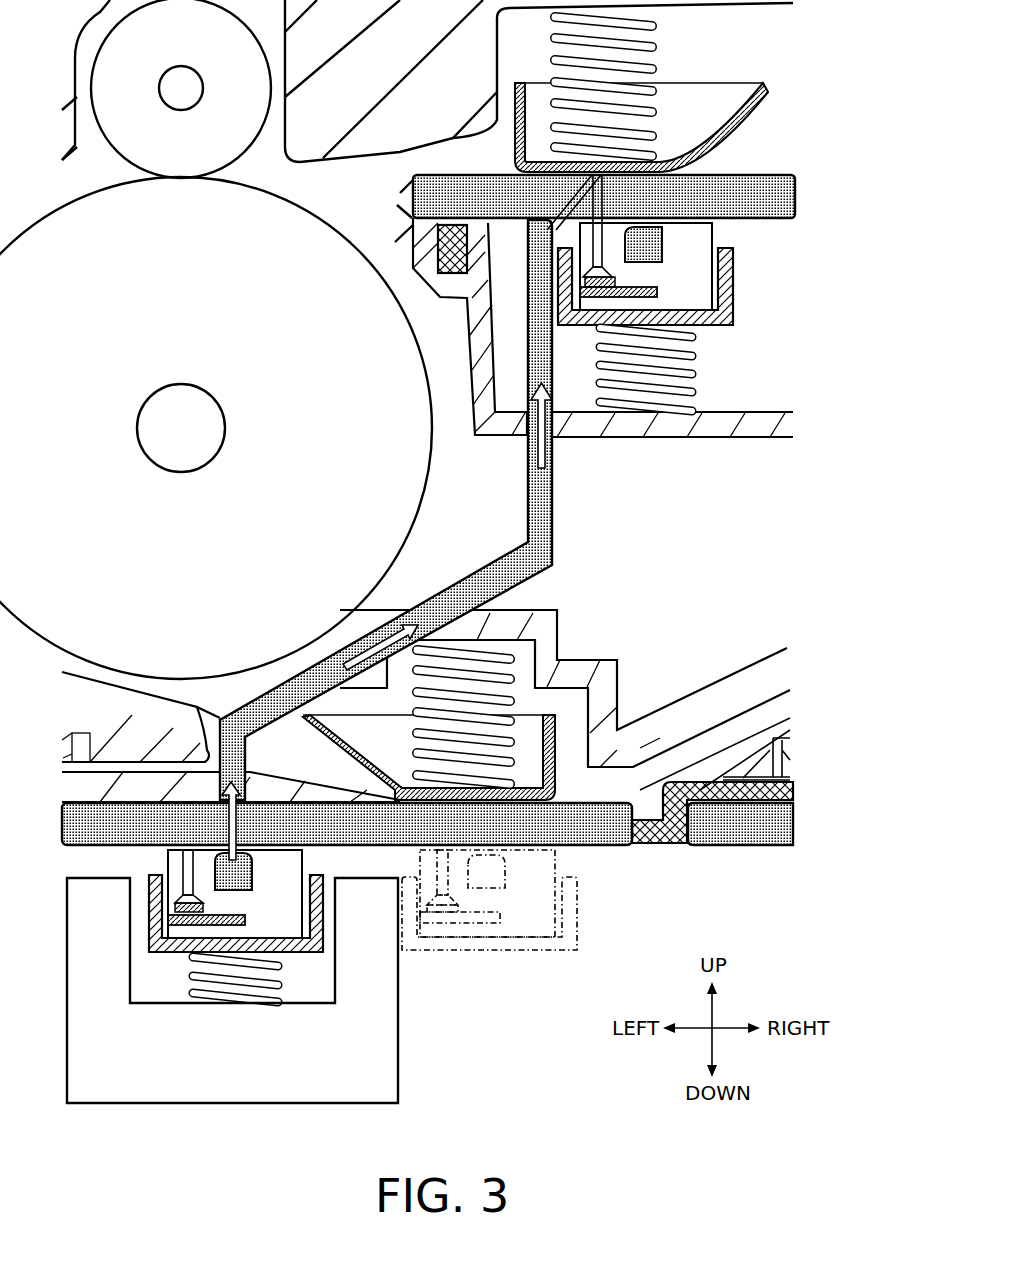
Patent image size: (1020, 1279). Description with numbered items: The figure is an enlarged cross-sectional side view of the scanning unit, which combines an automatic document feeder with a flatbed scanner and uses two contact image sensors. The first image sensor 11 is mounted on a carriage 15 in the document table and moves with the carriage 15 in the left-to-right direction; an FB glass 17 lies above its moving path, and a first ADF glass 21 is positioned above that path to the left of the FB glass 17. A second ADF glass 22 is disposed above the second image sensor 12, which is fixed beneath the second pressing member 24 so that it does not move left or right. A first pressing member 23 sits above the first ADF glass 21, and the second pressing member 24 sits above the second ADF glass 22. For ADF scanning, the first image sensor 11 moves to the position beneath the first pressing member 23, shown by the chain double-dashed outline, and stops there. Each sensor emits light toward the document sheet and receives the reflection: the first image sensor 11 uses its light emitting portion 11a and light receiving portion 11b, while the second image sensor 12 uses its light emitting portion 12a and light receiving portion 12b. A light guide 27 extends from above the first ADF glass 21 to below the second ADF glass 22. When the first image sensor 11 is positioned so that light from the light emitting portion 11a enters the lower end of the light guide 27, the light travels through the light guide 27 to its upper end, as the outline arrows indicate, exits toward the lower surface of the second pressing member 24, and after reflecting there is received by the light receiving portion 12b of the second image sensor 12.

The first image sensor 11 is at (302, 868).
The light emitting portion 11a is at (252, 855).
The light receiving portion 11b is at (205, 903).
The second image sensor 12 is at (712, 240).
The light emitting portion 12a is at (662, 232).
The light receiving portion 12b is at (617, 278).
The carriage 15 is at (398, 1088).
The FB glass 17 is at (728, 846).
The first ADF glass 21 is at (618, 846).
The second ADF glass 22 is at (757, 173).
The first pressing member 23 is at (392, 713).
The second pressing member 24 is at (727, 85).
The light guide 27 is at (552, 517).